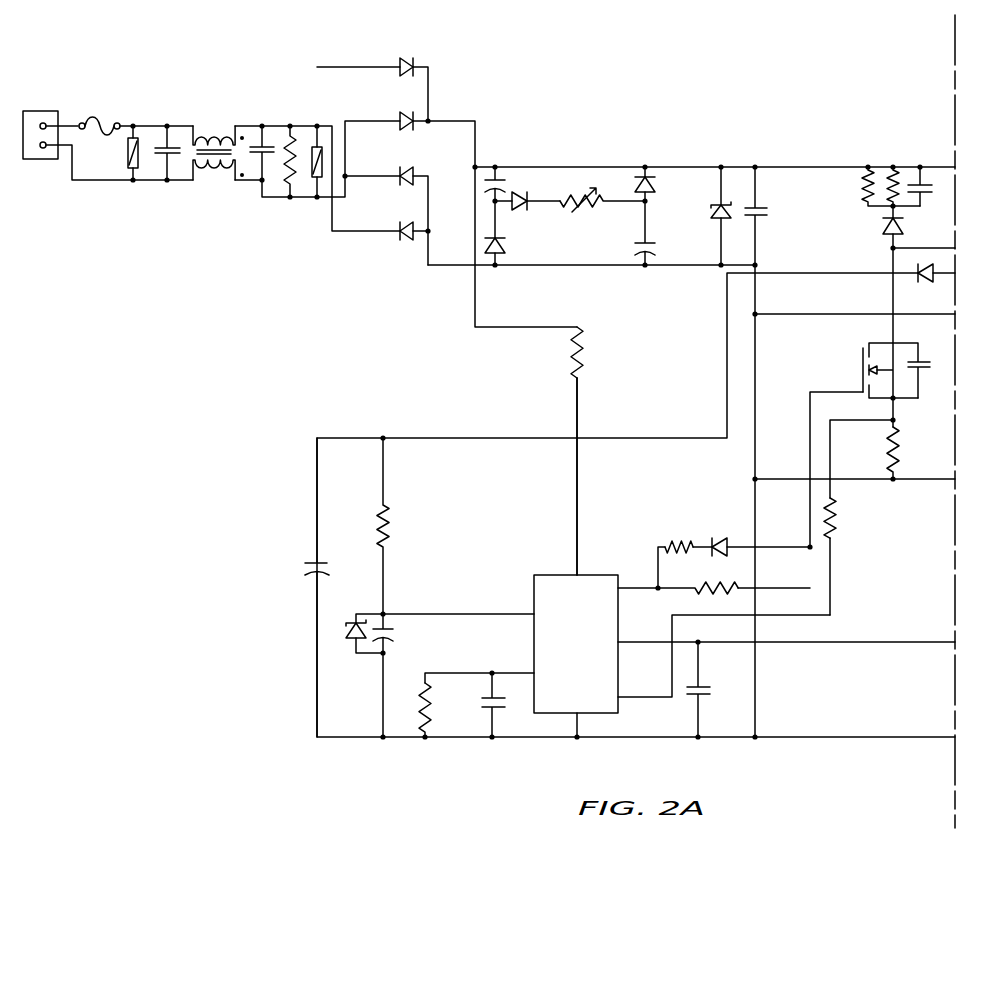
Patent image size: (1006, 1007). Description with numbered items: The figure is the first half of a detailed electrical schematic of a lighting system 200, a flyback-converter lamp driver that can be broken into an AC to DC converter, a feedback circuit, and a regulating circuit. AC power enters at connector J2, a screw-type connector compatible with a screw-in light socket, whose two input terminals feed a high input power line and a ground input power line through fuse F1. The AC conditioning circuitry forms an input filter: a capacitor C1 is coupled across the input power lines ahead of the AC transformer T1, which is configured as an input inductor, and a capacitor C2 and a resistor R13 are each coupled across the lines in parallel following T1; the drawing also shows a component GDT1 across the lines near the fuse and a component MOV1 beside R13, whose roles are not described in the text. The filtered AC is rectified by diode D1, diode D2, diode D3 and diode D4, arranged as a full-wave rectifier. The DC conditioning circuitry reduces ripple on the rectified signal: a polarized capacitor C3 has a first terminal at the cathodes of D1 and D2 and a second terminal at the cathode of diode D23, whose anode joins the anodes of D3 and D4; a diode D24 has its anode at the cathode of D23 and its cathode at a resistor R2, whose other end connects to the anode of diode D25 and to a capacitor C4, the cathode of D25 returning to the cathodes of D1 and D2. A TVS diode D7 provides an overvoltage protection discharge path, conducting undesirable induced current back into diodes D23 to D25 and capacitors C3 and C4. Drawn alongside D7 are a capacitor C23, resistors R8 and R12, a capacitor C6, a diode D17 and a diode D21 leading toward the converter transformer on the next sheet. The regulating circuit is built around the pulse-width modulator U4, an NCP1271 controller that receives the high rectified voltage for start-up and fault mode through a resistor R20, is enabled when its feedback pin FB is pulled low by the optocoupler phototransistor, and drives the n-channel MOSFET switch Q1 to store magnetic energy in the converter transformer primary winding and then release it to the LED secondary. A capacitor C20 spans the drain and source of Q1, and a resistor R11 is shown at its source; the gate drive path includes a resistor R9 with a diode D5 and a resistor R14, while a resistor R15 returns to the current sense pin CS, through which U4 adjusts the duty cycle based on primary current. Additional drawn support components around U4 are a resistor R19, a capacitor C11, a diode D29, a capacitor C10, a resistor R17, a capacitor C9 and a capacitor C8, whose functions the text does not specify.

The lighting system 200 is at (788, 72).
The connector J2 is at (42, 125).
The fuse F1 is at (99, 113).
The gas discharge tube GDT1 is at (126, 170).
The capacitor C1 is at (167, 136).
The AC transformer T1 is at (214, 144).
The capacitor C2 is at (262, 136).
The resistor R13 is at (272, 171).
The metal oxide varistor MOV1 is at (307, 171).
The diode D1 is at (394, 58).
The diode D2 is at (394, 111).
The diode D3 is at (394, 167).
The diode D4 is at (394, 222).
The polarized capacitor C3 is at (501, 170).
The diode D23 is at (512, 233).
The diode D24 is at (527, 193).
The resistor R2 is at (602, 216).
The diode D25 is at (664, 184).
The capacitor C4 is at (653, 233).
The TVS diode D7 is at (719, 202).
The capacitor C23 is at (767, 216).
The resistor R8 is at (879, 173).
The resistor R12 is at (903, 173).
The capacitor C6 is at (930, 173).
The diode D17 is at (871, 227).
The diode D21 is at (929, 287).
The resistor R20 is at (596, 352).
The switch Q1 is at (873, 331).
The capacitor C20 is at (923, 370).
The resistor R11 is at (912, 453).
The resistor R15 is at (848, 518).
The resistor R9 is at (679, 533).
The diode D5 is at (721, 534).
The resistor R14 is at (701, 579).
The pulse-width modulator U4 is at (582, 557).
The resistor R19 is at (401, 526).
The capacitor C11 is at (303, 587).
The zener diode D29 is at (351, 627).
The capacitor C10 is at (400, 675).
The resistor R17 is at (442, 709).
The capacitor C9 is at (498, 705).
The capacitor C8 is at (704, 689).